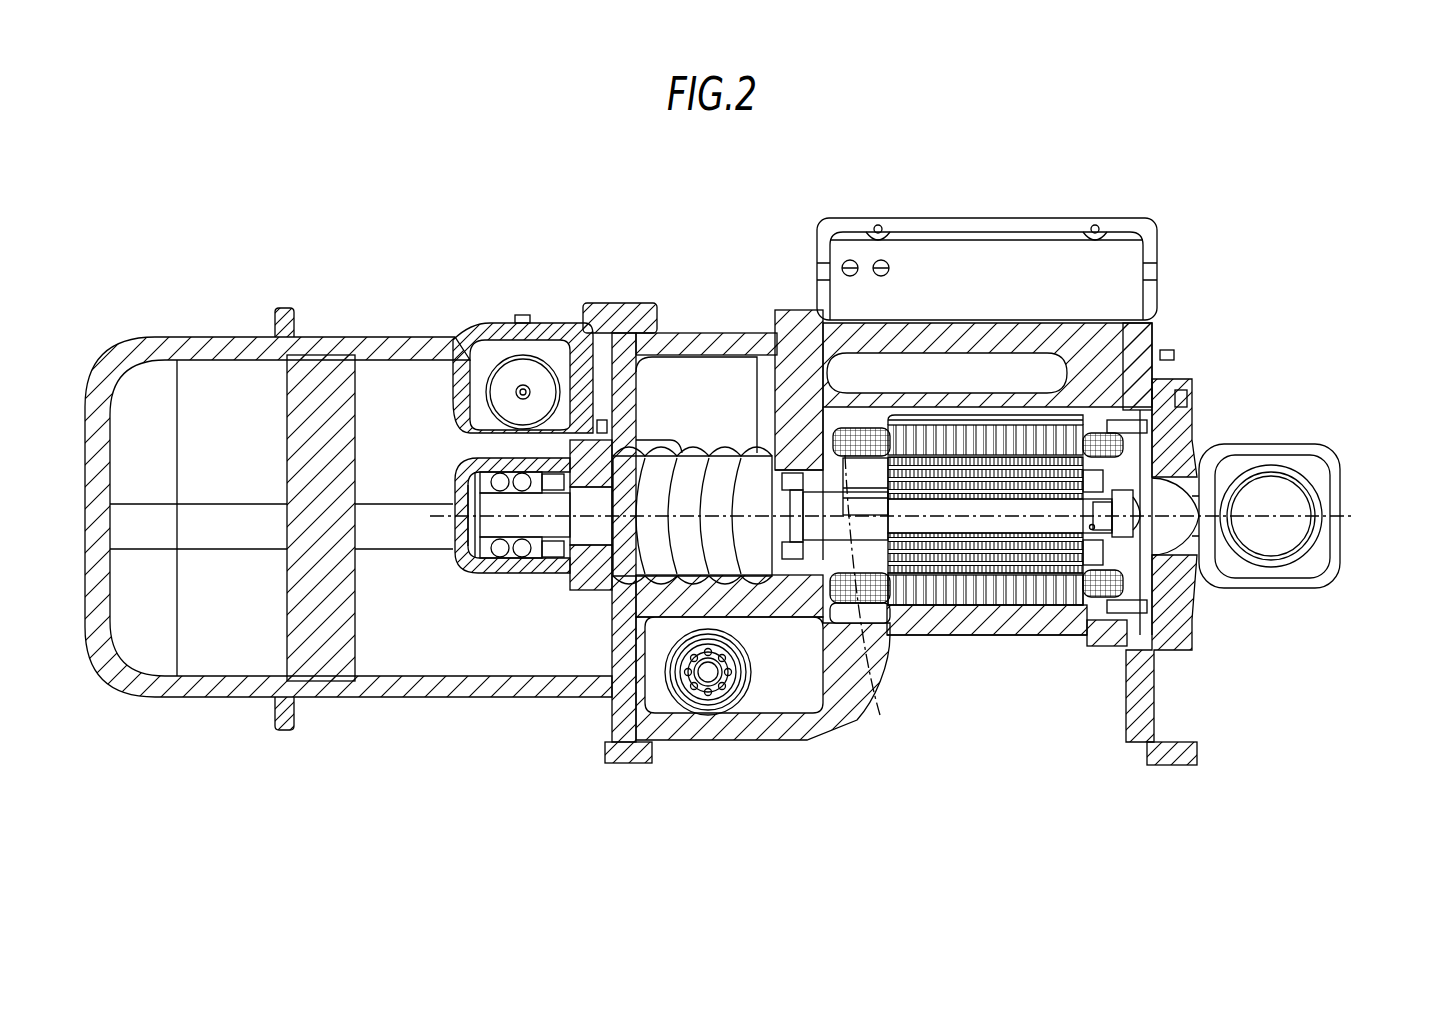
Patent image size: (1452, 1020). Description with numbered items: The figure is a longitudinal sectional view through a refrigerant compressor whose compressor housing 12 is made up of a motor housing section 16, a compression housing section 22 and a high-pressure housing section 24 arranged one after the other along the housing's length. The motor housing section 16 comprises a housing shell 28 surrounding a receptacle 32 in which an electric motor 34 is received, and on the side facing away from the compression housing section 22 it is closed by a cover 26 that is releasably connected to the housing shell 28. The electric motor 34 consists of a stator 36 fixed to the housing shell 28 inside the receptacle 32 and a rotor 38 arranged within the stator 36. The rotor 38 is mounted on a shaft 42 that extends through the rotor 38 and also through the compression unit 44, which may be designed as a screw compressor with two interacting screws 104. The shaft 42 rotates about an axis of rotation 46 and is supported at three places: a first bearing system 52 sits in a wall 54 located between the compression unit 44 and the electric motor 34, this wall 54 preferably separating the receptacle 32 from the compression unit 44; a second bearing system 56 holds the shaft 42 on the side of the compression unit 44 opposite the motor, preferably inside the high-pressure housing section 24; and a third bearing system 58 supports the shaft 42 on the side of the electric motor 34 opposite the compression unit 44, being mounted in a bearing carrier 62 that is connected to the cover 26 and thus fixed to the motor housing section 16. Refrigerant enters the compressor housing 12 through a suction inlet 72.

The compressor housing 12 is at (488, 318).
The motor housing section 16 is at (997, 637).
The compression housing section 22 is at (723, 580).
The high-pressure housing section 24 is at (406, 683).
The cover 26 is at (1175, 440).
The housing shell 28 is at (1067, 625).
The receptacle 32 is at (1002, 430).
The electric motor 34 is at (972, 577).
The stator 36 is at (927, 590).
The rotor 38 is at (920, 468).
The shaft 42 is at (1057, 522).
The compression unit 44 is at (690, 450).
The axis of rotation 46 is at (869, 606).
The first bearing system 52 is at (786, 470).
The wall 54 is at (797, 468).
The second bearing system 56 is at (546, 578).
The third bearing system 58 is at (1120, 545).
The bearing carrier 62 is at (1120, 488).
The suction inlet 72 is at (1328, 462).
The screws 104 is at (692, 418).